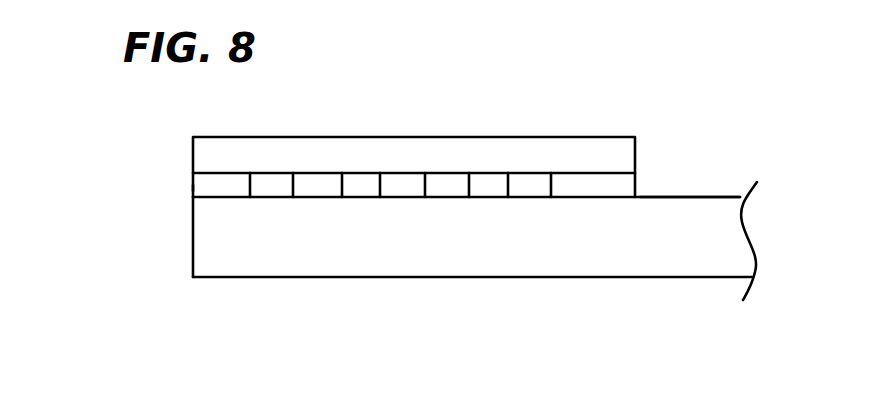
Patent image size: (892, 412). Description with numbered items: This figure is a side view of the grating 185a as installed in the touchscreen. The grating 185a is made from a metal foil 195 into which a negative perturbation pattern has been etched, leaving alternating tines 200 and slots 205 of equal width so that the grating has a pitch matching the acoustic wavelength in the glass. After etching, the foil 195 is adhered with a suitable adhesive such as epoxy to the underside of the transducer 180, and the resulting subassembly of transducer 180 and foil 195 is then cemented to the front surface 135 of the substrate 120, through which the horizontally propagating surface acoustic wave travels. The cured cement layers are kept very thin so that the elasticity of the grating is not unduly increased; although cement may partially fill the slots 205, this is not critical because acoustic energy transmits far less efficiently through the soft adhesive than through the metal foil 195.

The substrate 120 is at (520, 258).
The front surface 135 is at (688, 197).
The transducer 180 is at (353, 150).
The grating 185a is at (192, 188).
The metal foil 195 is at (578, 185).
The tines 200 is at (305, 183).
The slots 205 is at (522, 183).